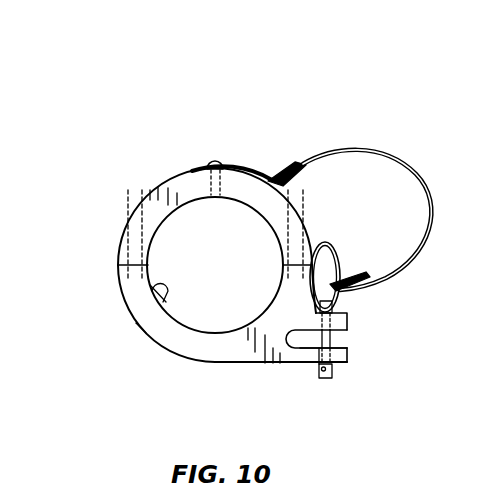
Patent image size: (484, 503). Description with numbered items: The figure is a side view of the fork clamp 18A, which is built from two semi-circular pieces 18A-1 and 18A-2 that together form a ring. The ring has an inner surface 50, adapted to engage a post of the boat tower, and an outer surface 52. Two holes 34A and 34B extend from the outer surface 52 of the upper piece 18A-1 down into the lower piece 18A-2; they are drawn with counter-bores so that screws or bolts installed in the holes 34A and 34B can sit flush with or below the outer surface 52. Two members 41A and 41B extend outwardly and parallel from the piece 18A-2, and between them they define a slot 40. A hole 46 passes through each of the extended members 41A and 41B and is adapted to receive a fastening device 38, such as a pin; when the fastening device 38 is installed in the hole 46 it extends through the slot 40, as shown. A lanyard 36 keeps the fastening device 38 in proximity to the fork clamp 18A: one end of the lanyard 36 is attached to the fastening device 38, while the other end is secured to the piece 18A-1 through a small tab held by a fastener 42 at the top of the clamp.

The fork clamp 18A is at (151, 151).
The semi-circular piece 18A-1 is at (150, 186).
The semi-circular piece 18A-2 is at (183, 342).
The hole 34A is at (134, 226).
The hole 34B is at (310, 232).
The lanyard 36 is at (412, 171).
The fastening device 38 is at (318, 378).
The slot 40 is at (340, 338).
The member 41A is at (350, 322).
The member 41B is at (345, 368).
The fastener 42 is at (217, 162).
The hole 46 is at (350, 358).
The inner surface 50 is at (158, 293).
The outer surface 52 is at (140, 328).